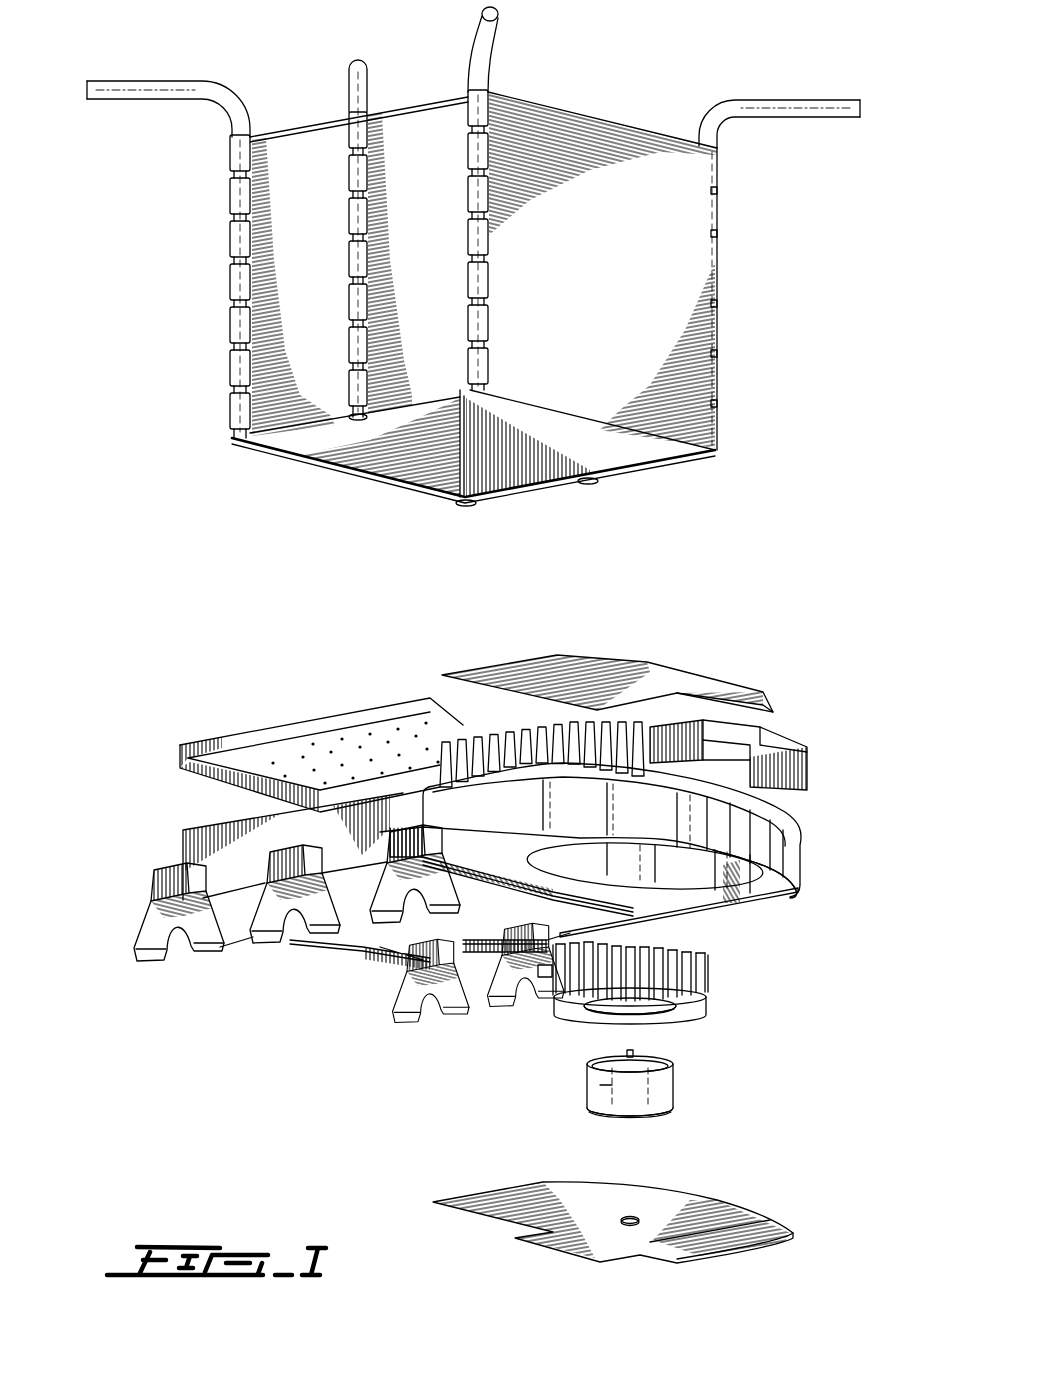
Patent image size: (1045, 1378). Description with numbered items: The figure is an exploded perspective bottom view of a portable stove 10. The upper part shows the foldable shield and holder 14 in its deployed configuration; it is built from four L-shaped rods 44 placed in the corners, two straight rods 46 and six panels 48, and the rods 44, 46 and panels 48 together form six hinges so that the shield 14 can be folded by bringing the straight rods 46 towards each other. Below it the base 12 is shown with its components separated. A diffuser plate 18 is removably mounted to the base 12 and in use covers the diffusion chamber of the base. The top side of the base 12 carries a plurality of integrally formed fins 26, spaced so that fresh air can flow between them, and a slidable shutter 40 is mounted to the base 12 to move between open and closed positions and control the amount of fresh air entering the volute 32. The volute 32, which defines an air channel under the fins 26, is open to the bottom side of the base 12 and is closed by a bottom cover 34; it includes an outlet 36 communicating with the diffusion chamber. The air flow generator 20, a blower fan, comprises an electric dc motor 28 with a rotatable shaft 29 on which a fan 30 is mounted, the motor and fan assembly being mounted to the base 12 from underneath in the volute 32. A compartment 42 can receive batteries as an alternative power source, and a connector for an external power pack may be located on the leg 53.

The portable stove 10 is at (176, 663).
The base 12 is at (785, 838).
The foldable shield and holder 14 is at (473, 253).
The diffuser plate 18 is at (295, 737).
The air flow generator 20 is at (716, 1006).
The fins 26 is at (470, 745).
The electric dc motor 28 is at (612, 1088).
The rotatable shaft 29 is at (633, 1054).
The fan 30 is at (698, 963).
The volute 32 is at (713, 900).
The bottom cover 34 is at (697, 1248).
The outlet 36 is at (540, 966).
The slidable shutter 40 is at (808, 775).
The compartment 42 is at (462, 857).
The L-shaped rods 44 is at (794, 103).
The straight rods 46 is at (362, 82).
The panels 48 is at (590, 165).
The leg 53 is at (778, 893).